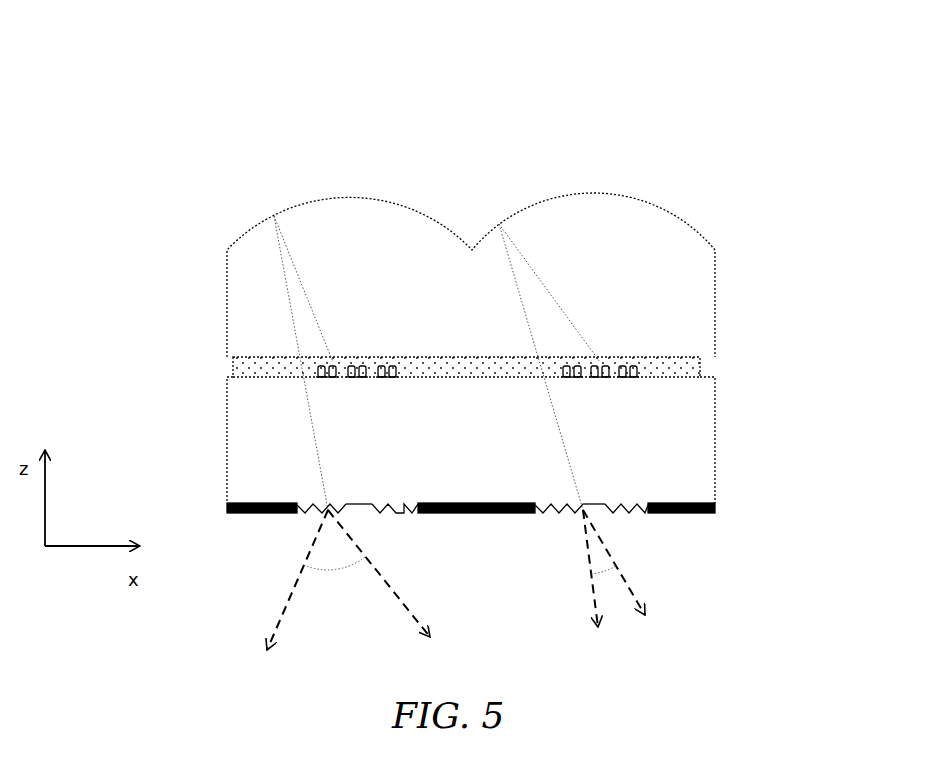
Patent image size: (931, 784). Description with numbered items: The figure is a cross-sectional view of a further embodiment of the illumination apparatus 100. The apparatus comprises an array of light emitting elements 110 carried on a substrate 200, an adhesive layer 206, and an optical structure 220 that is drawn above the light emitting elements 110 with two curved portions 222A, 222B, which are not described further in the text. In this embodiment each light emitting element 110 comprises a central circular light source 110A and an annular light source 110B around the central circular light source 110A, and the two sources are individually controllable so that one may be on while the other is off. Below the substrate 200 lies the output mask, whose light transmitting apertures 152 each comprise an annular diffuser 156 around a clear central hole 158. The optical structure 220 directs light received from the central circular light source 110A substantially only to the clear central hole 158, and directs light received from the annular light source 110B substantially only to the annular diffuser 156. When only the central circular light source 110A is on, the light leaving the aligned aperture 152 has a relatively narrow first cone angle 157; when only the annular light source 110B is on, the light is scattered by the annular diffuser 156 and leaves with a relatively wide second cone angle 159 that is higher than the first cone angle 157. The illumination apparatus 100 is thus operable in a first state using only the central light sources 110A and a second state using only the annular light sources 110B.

The illumination apparatus 100 is at (505, 122).
The light emitting element 110 is at (640, 370).
The central circular light source 110A is at (362, 364).
The annular light source 110B is at (330, 364).
The light transmitting aperture 152 is at (640, 516).
The annular diffuser 156 is at (393, 509).
The first cone angle 157 is at (615, 587).
The clear central hole 158 is at (357, 508).
The second cone angle 159 is at (330, 570).
The substrate 200 is at (227, 450).
The adhesive layer 206 is at (233, 368).
The optical structure 220 is at (227, 305).
The first lens 222A is at (248, 230).
The second lens 222B is at (648, 202).